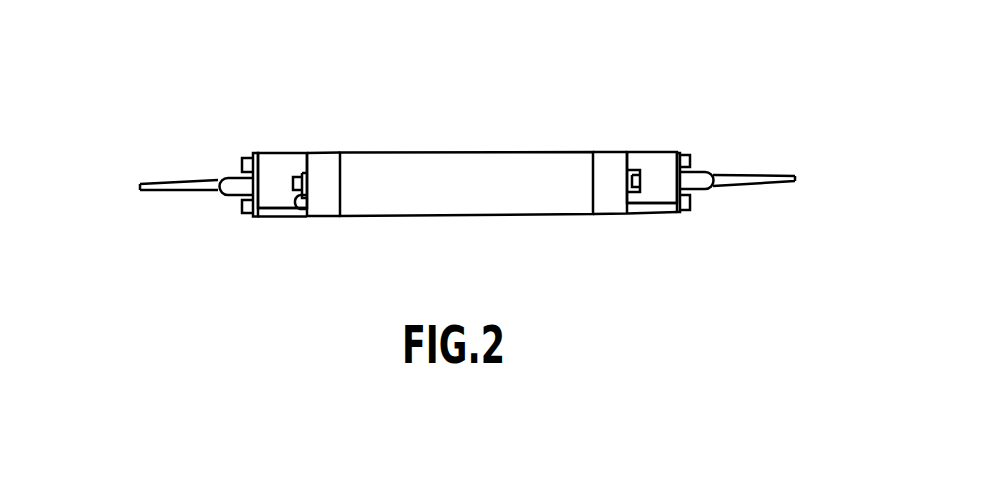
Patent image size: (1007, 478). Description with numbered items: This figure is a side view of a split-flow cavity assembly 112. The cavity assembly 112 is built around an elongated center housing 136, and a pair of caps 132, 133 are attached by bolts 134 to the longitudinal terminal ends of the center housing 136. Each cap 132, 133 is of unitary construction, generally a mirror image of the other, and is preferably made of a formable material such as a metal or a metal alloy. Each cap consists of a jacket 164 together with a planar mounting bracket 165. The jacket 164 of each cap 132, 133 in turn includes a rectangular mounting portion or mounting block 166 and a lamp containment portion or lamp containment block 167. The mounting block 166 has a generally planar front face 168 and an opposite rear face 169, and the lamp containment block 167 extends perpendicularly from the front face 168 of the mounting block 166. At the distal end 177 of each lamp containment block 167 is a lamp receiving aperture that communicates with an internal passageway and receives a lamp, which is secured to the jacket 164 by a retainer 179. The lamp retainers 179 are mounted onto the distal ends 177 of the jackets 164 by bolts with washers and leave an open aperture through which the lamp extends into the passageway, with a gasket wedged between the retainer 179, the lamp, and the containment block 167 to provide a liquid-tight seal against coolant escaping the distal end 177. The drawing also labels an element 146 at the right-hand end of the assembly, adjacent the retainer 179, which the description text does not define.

The cavity assembly 112 is at (467, 180).
The cap 132 is at (290, 213).
The cap 133 is at (672, 162).
The bolts 134 is at (298, 210).
The center housing 136 is at (477, 158).
The second ferrule 146 is at (712, 188).
The jacket 164 is at (290, 157).
The planar mounting bracket 165 is at (667, 207).
The mounting block 166 is at (325, 157).
The lamp containment block 167 is at (717, 146).
The front face 168 is at (630, 158).
The rear face 169 is at (582, 160).
The distal end 177 is at (254, 157).
The retainer 179 is at (255, 218).